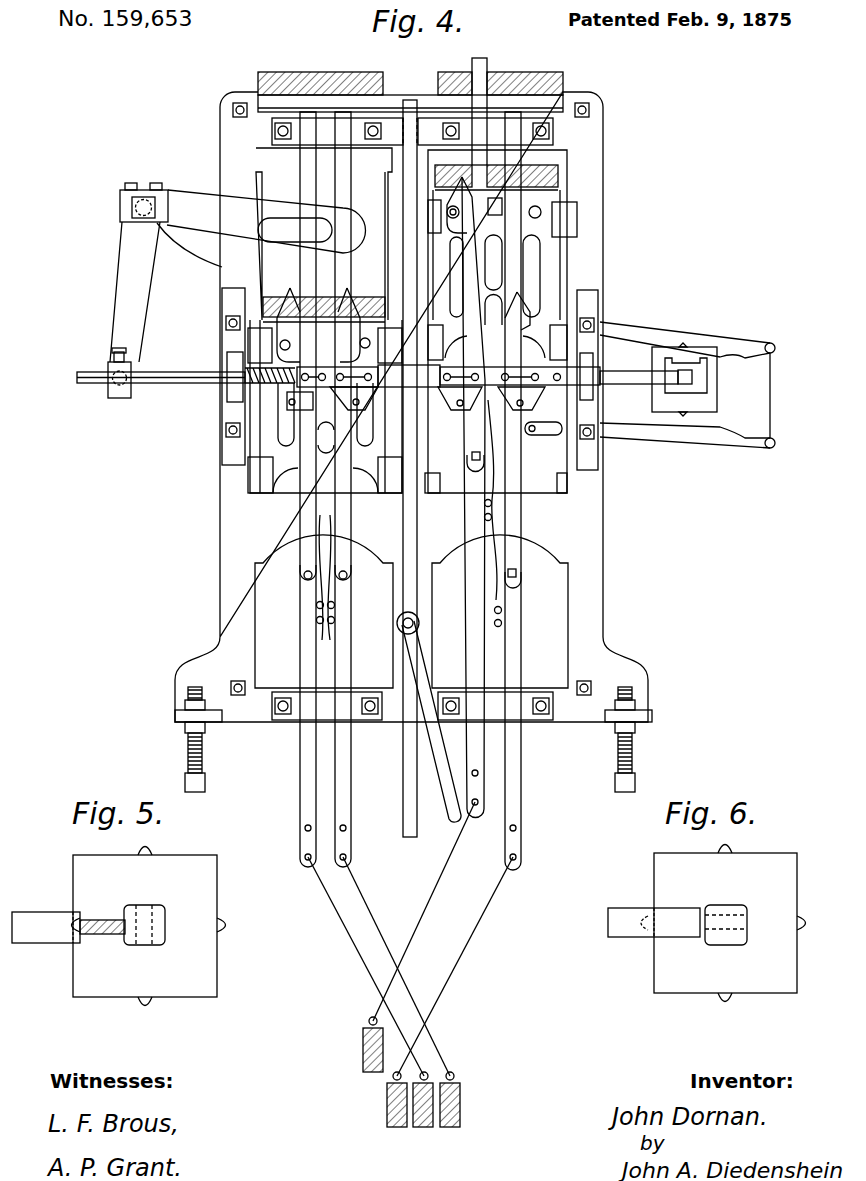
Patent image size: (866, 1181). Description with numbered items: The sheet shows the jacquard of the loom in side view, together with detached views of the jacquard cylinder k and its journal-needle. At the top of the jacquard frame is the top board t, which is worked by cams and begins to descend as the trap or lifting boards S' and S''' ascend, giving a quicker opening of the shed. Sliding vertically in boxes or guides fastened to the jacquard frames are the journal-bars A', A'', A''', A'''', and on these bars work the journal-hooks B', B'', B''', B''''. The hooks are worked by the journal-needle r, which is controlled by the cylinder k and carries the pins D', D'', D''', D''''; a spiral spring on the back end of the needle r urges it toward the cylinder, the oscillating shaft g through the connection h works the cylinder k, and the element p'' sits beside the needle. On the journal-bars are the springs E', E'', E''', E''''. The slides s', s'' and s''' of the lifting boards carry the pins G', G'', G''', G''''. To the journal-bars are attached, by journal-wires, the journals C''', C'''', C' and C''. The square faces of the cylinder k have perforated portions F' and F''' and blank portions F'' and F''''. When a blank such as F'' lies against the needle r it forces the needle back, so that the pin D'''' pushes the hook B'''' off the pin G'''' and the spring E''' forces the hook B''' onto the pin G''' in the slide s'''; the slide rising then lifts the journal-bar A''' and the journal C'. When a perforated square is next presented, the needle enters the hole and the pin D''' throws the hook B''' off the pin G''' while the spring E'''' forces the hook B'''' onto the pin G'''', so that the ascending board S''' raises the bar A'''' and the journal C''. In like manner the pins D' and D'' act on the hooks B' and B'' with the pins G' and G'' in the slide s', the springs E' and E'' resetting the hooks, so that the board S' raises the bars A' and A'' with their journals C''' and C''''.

In FIG. 4, the top board t is at (410, 67).
In FIG. 4, the trap or lifting board S' is at (324, 301).
In FIG. 4, the trap or lifting board S''' is at (521, 177).
In FIG. 4, the lifting board slide s' is at (322, 414).
In FIG. 4, the slot s'' is at (322, 445).
In FIG. 4, the lifting board slide s''' is at (496, 280).
In FIG. 4, the oscillating shaft g is at (229, 290).
In FIG. 4, the rod h is at (365, 379).
In FIG. 4, the block p'' is at (226, 382).
In FIG. 4, the journal-needle r is at (448, 376).
In FIG. 4, the pin D' is at (301, 401).
In FIG. 4, the pin D'' is at (354, 398).
In FIG. 4, the pin D''' is at (460, 398).
In FIG. 4, the pin D'''' is at (521, 398).
In FIG. 4, the journal-hook B' is at (306, 489).
In FIG. 4, the journal-hook B'' is at (342, 489).
In FIG. 4, the journal-hook B''' is at (476, 497).
In FIG. 4, the journal-hook B'''' is at (518, 491).
In FIG. 4, the pin G' is at (286, 325).
In FIG. 4, the pin G'' is at (355, 325).
In FIG. 4, the pin G''' is at (453, 206).
In FIG. 4, the pin G'''' is at (528, 268).
In FIG. 4, the spring E' is at (317, 577).
In FIG. 4, the spring E'' is at (344, 557).
In FIG. 4, the spring E''' is at (482, 500).
In FIG. 4, the spring E'''' is at (500, 598).
In FIG. 4, the journal-bar A' is at (294, 847).
In FIG. 4, the journal-bar A'' is at (358, 842).
In FIG. 4, the journal-bar A''' is at (437, 717).
In FIG. 4, the journal-bar A'''' is at (532, 822).
In FIG. 4, the journal C' is at (405, 937).
In FIG. 4, the journal C'' is at (435, 992).
In FIG. 4, the journal C''' is at (372, 1003).
In FIG. 4, the journal C'''' is at (419, 992).
In FIG. 4, the cylinder k is at (719, 380).
In FIG. 5, the perforated portion F' is at (113, 907).
In FIG. 6, the perforated portion F' is at (654, 932).
In FIG. 5, the blank portion F'' is at (156, 925).
In FIG. 6, the blank portion F'' is at (726, 914).
In FIG. 5, the perforated portion F''' is at (117, 928).
In FIG. 6, the perforated portion F''' is at (741, 925).
In FIG. 5, the blank portion F'''' is at (147, 937).
In FIG. 6, the blank portion F'''' is at (726, 950).